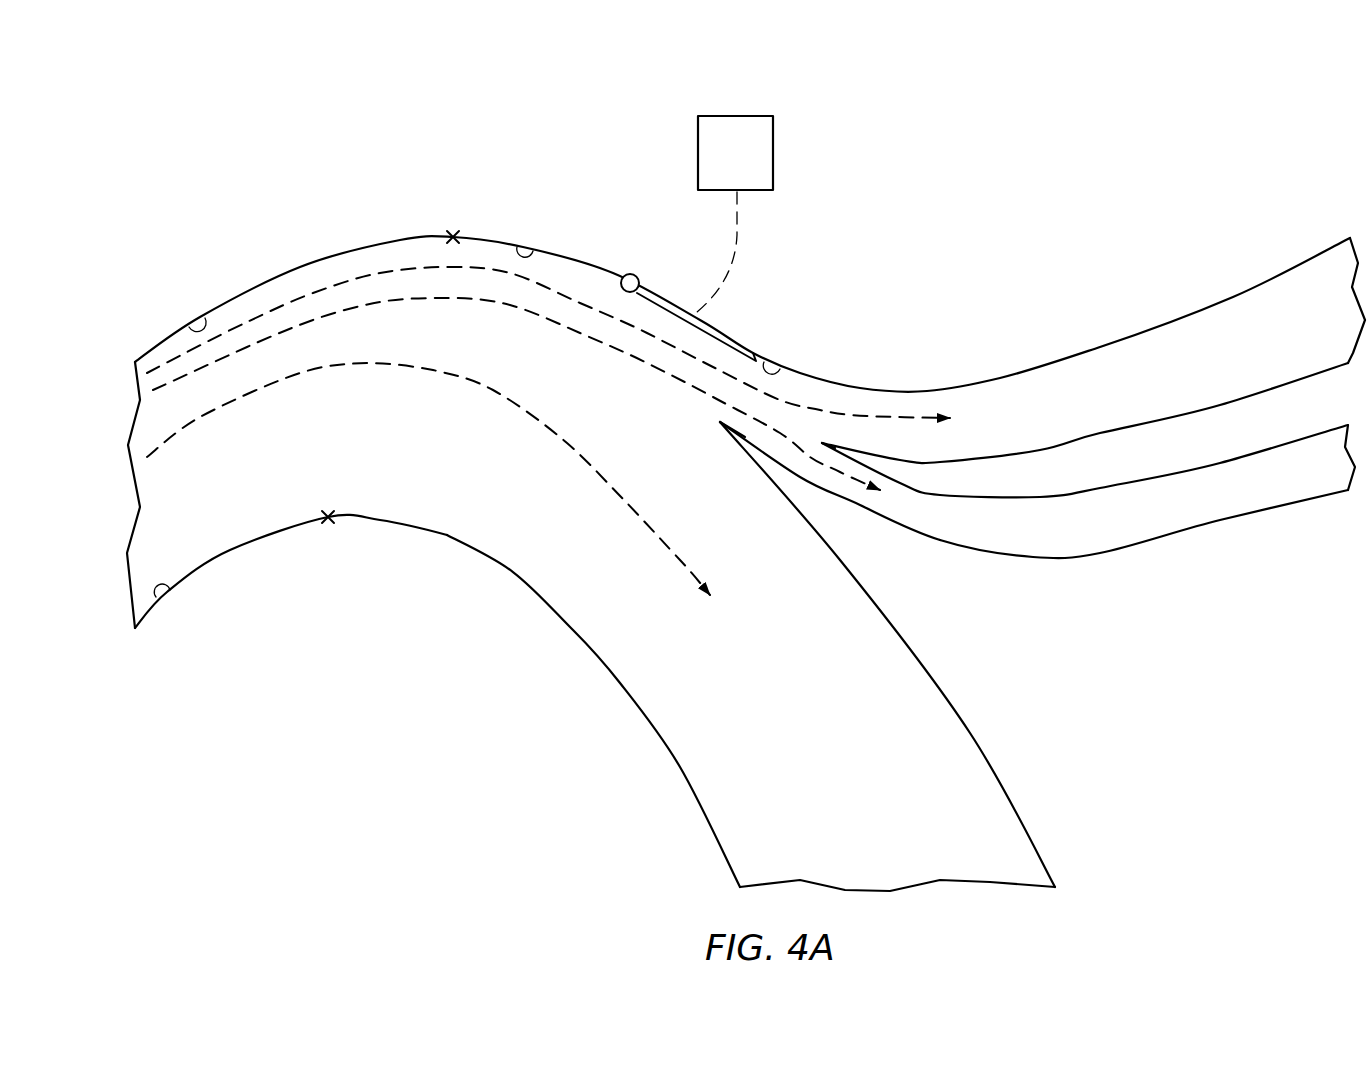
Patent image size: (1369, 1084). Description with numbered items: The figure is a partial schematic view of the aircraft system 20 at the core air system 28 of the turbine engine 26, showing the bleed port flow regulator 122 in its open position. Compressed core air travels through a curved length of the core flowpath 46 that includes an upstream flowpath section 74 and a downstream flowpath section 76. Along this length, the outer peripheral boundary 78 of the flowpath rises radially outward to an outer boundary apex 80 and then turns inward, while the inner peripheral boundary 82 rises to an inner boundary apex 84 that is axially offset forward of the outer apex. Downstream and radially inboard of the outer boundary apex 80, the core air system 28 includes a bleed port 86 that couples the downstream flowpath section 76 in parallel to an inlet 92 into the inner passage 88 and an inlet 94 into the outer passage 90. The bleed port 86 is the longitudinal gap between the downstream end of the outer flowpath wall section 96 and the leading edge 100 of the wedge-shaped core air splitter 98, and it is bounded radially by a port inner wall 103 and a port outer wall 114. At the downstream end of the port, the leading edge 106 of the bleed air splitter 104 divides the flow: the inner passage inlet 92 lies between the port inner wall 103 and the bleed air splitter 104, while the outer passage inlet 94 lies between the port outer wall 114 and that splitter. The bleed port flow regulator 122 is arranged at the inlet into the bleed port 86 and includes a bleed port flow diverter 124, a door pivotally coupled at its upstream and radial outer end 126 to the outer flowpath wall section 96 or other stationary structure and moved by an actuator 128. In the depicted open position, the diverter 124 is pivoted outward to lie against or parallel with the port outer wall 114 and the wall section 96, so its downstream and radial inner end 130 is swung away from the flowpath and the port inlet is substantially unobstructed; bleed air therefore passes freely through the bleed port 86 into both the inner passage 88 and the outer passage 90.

The aircraft system 20 is at (694, 334).
The turbine engine 26 is at (172, 92).
The core air system 28 is at (874, 234).
The core flowpath 46 is at (841, 763).
The upstream flowpath section 74 is at (222, 570).
The downstream flowpath section 76 is at (522, 610).
The outer peripheral boundary 78 is at (195, 323).
The outer boundary apex 80 is at (451, 233).
The inner peripheral boundary 82 is at (165, 603).
The inner boundary apex 84 is at (326, 512).
The bleed port 86 is at (819, 435).
The inner passage 88 is at (1284, 495).
The outer passage 90 is at (1276, 350).
The inlet into the inner passage 92 is at (812, 472).
The inlet into the outer passage 94 is at (843, 395).
The outer flowpath wall section 96 is at (532, 245).
The core air splitter 98 is at (727, 445).
The leading edge of the core air splitter 100 is at (718, 425).
The inner wall of the bleed port 103 is at (745, 437).
The bleed air splitter 104 is at (855, 449).
The leading edge of the bleed air splitter 106 is at (826, 440).
The outer wall of the bleed port 114 is at (774, 359).
The bleed port flow regulator 122 is at (727, 320).
The bleed port flow diverter 124 is at (661, 292).
The upstream and radial outer end of the bleed port flow diverter 126 is at (635, 272).
The actuator 128 is at (758, 163).
The downstream and radial inner end of the bleed port flow diverter 130 is at (750, 360).